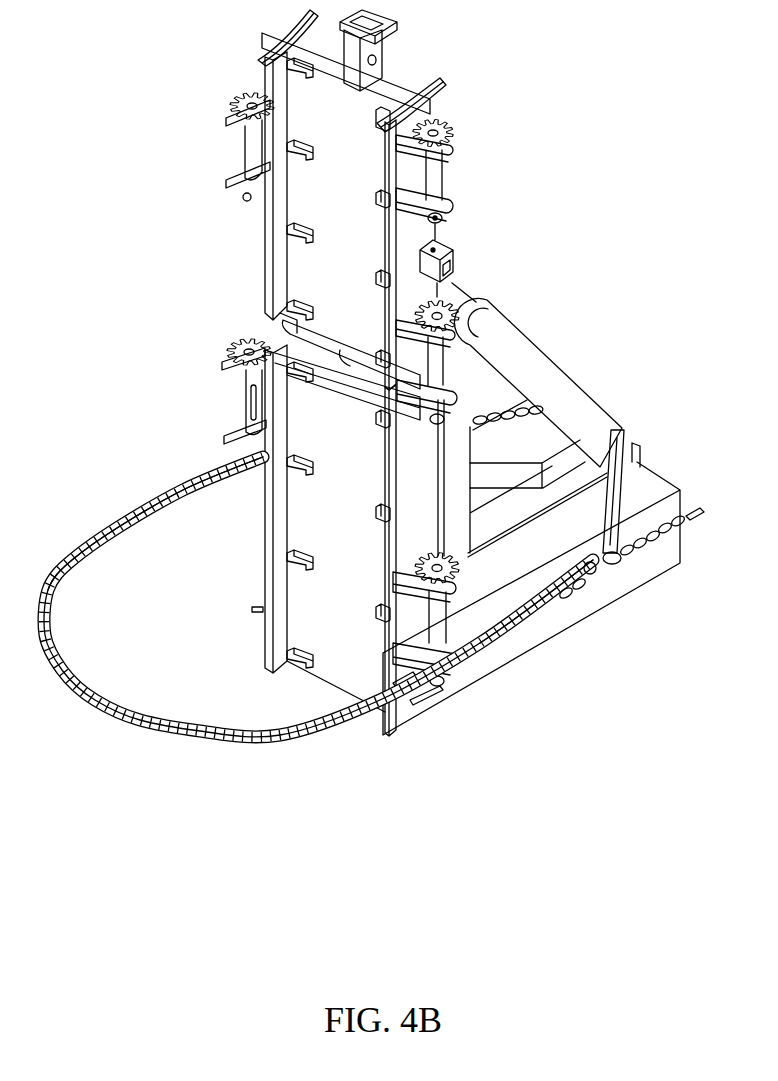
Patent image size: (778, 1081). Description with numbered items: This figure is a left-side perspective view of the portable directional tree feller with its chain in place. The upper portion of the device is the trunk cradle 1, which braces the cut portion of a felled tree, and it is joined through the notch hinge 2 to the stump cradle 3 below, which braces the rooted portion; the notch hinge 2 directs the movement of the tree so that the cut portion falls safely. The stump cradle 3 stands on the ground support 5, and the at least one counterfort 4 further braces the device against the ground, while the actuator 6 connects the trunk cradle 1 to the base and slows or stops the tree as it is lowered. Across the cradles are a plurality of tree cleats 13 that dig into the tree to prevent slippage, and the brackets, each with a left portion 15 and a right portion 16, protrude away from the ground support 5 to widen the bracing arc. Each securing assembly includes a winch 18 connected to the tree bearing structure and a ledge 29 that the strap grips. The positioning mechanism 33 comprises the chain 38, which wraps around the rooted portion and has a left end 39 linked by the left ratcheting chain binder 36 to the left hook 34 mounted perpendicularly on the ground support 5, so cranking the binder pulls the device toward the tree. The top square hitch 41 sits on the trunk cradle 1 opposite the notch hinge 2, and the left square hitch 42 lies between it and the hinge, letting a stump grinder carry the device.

The trunk cradle 1 is at (267, 240).
The notch hinge 2 is at (268, 330).
The stump cradle 3 is at (256, 544).
The at least one counterfort 4 is at (500, 473).
The ground support 5 is at (509, 676).
The actuator 6 is at (572, 373).
The plurality of tree cleats 13 is at (290, 72).
The left portion 15 is at (383, 130).
The right portion 16 is at (265, 52).
The winch 18 is at (252, 156).
The ledge 29 is at (437, 463).
The positioning mechanism 33 is at (64, 692).
The left hook 34 is at (695, 512).
The left ratcheting chain binder 36 is at (603, 572).
The chain 38 is at (115, 532).
The left end 39 is at (545, 612).
The top square hitch 41 is at (373, 82).
The left square hitch 42 is at (453, 272).